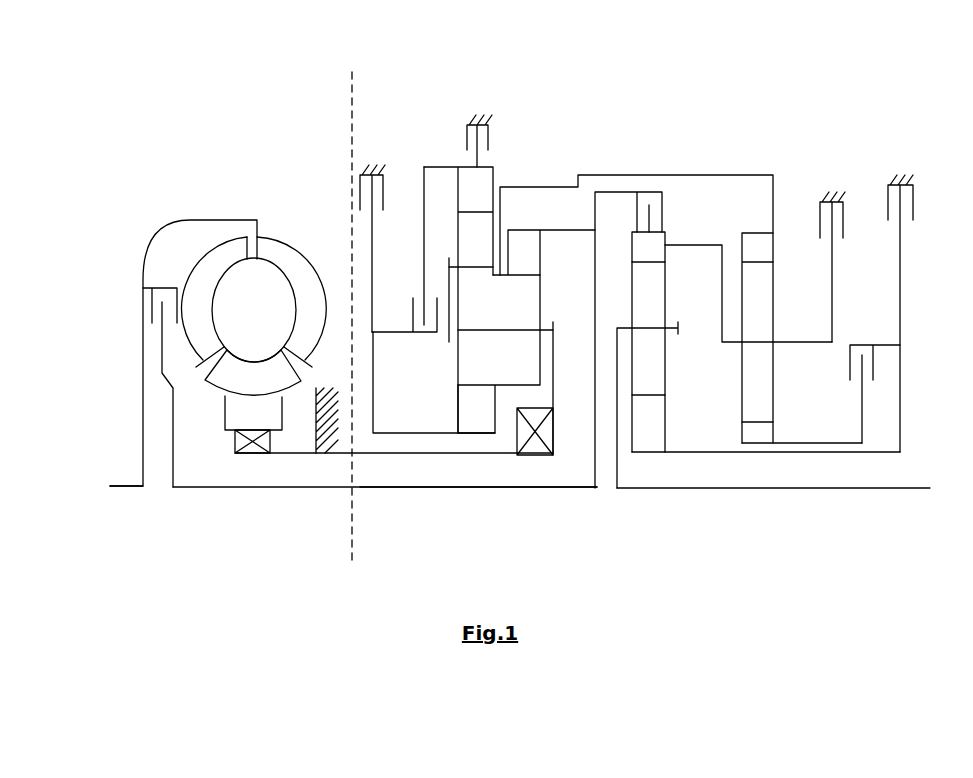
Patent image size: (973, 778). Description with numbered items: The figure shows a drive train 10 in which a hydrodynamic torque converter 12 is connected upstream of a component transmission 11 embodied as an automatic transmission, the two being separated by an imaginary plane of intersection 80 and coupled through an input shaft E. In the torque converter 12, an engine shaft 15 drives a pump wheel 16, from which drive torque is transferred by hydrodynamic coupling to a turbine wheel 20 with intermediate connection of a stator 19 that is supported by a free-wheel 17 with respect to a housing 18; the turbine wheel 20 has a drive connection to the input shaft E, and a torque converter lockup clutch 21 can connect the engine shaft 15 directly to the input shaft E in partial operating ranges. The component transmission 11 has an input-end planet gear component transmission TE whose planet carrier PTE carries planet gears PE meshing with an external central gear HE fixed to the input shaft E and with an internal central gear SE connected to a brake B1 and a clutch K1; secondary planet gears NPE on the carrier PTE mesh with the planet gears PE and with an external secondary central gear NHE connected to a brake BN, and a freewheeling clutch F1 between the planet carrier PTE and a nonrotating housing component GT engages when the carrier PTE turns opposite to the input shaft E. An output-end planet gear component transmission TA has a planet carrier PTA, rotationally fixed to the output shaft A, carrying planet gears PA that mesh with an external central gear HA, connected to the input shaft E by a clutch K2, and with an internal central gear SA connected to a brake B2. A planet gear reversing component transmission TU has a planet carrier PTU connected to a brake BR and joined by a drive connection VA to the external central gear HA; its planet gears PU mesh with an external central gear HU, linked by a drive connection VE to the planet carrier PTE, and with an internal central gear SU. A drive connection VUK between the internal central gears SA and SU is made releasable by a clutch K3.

The drive train 10 is at (548, 110).
The component transmission 11 is at (728, 113).
The hydrodynamic torque converter 12 is at (222, 200).
The engine shaft 15 is at (126, 487).
The pump wheel 16 is at (275, 248).
The free-wheel 17 is at (255, 445).
The housing 18 is at (313, 453).
The stator 19 is at (227, 378).
The turbine wheel 20 is at (210, 268).
The torque converter lockup clutch 21 is at (148, 310).
The plane of intersection 80 is at (350, 85).
The brake B1 is at (375, 233).
The brake B2 is at (903, 299).
The brake BR is at (836, 254).
The brake BN is at (480, 126).
The clutch K1 is at (404, 249).
The clutch K2 is at (643, 340).
The clutch K3 is at (874, 350).
The freewheeling clutch F1 is at (548, 437).
The external secondary central gear NHE is at (482, 182).
The external central gear HE is at (530, 268).
The secondary planet gears NPE is at (487, 303).
The planet gears PE is at (463, 365).
The planet carrier PTE is at (447, 335).
The internal central gear SE is at (470, 403).
The drive connection VE is at (600, 172).
The rotationally fixed drive connection VA is at (701, 243).
The drive connection VUK is at (866, 399).
The external central gear HA is at (642, 247).
The planet gears PA is at (652, 310).
The internal central gear SA is at (655, 443).
The planet carrier PTA is at (679, 336).
The external central gear HU is at (758, 245).
The planet gears PU is at (765, 328).
The internal central gear SU is at (765, 438).
The planet carrier PTU is at (802, 348).
The input-end planet gear component transmission TE is at (449, 470).
The output-end planet gear component transmission TA is at (663, 460).
The planet gear reversing component transmission TU is at (770, 458).
The nonrotating housing component GT is at (330, 408).
The input shaft E is at (348, 490).
The output shaft A is at (881, 487).